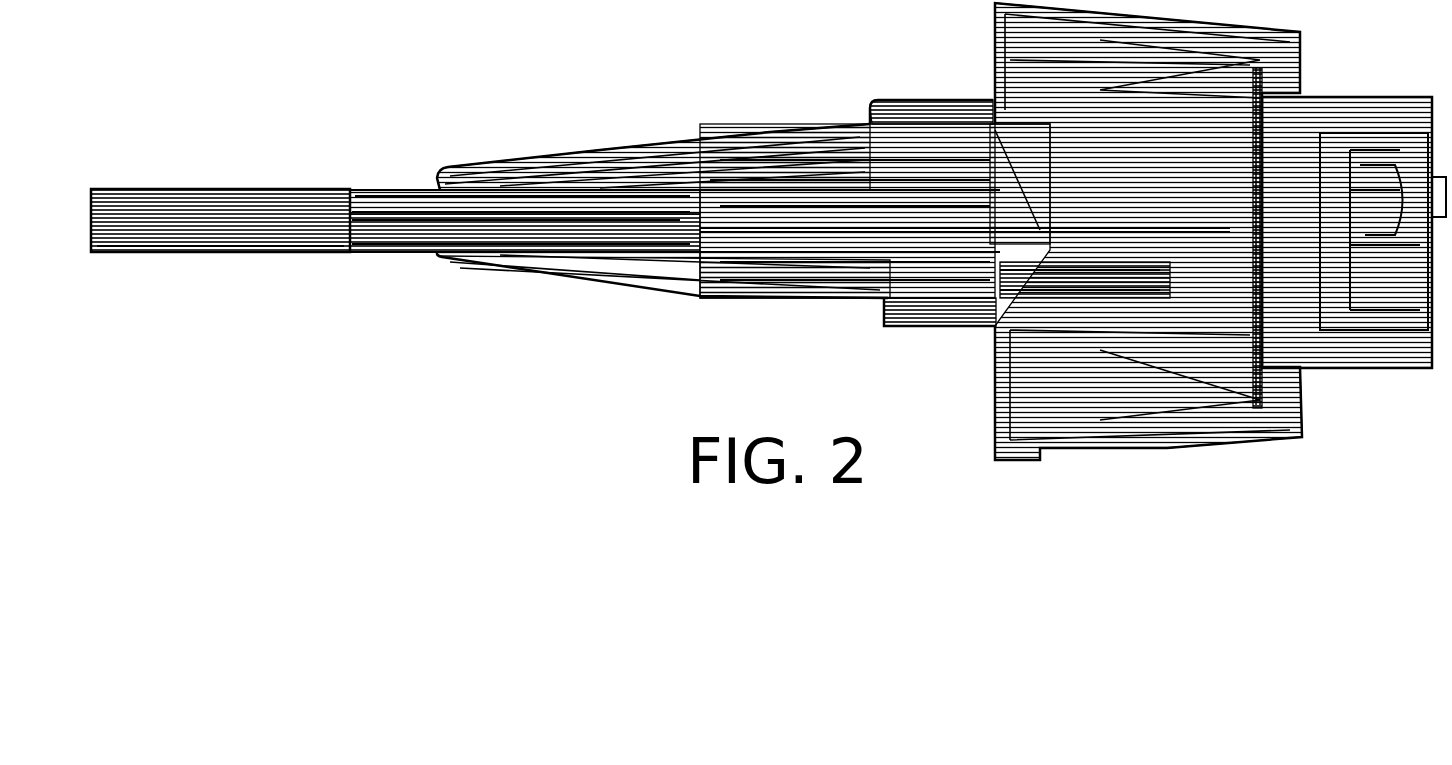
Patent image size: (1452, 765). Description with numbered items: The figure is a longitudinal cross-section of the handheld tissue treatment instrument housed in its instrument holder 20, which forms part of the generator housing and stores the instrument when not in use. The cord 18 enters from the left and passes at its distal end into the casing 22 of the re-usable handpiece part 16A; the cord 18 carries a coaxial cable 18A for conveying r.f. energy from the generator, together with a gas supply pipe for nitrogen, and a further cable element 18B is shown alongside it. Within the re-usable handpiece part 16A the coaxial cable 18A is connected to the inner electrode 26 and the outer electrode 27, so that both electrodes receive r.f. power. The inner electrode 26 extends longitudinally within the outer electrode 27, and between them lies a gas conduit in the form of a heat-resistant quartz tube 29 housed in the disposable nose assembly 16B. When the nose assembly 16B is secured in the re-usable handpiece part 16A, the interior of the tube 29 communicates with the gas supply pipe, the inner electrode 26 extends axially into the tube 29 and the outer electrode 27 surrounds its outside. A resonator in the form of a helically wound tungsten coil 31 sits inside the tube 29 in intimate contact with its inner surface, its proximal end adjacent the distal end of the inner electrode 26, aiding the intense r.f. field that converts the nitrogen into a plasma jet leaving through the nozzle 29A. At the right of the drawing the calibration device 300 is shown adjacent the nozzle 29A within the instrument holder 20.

The cord 18 is at (178, 233).
The coaxial cable 18A is at (390, 252).
The cable outer shield 18B is at (384, 193).
The casing 22 is at (532, 166).
The inner electrode 26 is at (768, 206).
The outer electrode 27 is at (950, 165).
The helically wound tungsten coil 31 is at (1045, 235).
The re-usable handpiece part 16A is at (705, 291).
The disposable nose assembly 16B is at (934, 328).
The heat-resistant tube 29 is at (986, 320).
The nozzle 29A is at (1283, 184).
The instrument holder 20 is at (1116, 320).
The calibration device 300 is at (1386, 369).